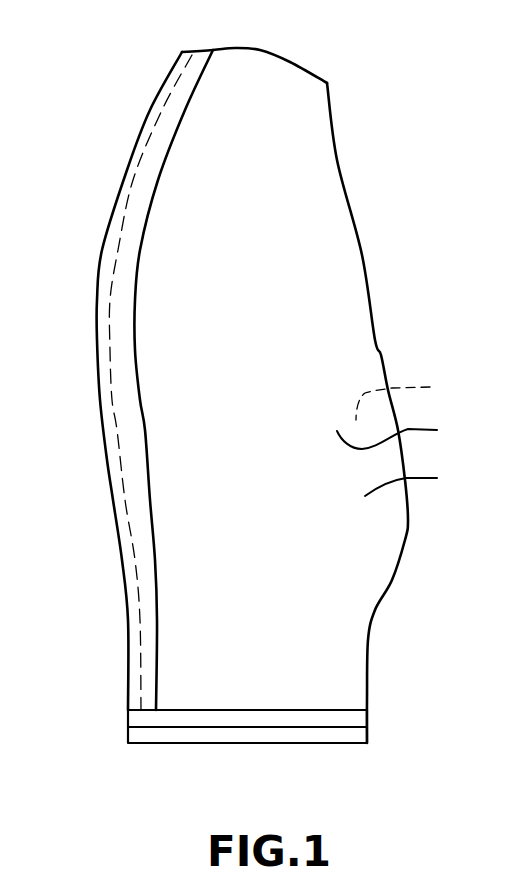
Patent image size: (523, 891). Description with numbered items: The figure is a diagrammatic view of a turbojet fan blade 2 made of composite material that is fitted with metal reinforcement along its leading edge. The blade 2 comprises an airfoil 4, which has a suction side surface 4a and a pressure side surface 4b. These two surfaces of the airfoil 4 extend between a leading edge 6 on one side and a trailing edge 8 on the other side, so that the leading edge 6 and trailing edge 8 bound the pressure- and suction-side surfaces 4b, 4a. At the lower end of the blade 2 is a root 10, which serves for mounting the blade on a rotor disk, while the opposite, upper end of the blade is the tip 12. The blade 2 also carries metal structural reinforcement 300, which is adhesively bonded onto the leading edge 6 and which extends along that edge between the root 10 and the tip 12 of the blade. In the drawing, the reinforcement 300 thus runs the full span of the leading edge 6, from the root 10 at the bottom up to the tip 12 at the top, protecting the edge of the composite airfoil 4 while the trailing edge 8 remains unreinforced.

The turbojet fan blade 2 is at (254, 396).
The airfoil 4 is at (411, 482).
The suction side surface 4a is at (415, 397).
The pressure side surface 4b is at (406, 436).
The leading edge 6 is at (108, 412).
The trailing edge 8 is at (380, 353).
The root 10 is at (128, 733).
The tip 12 is at (296, 65).
The metal structural reinforcement 300 is at (138, 569).